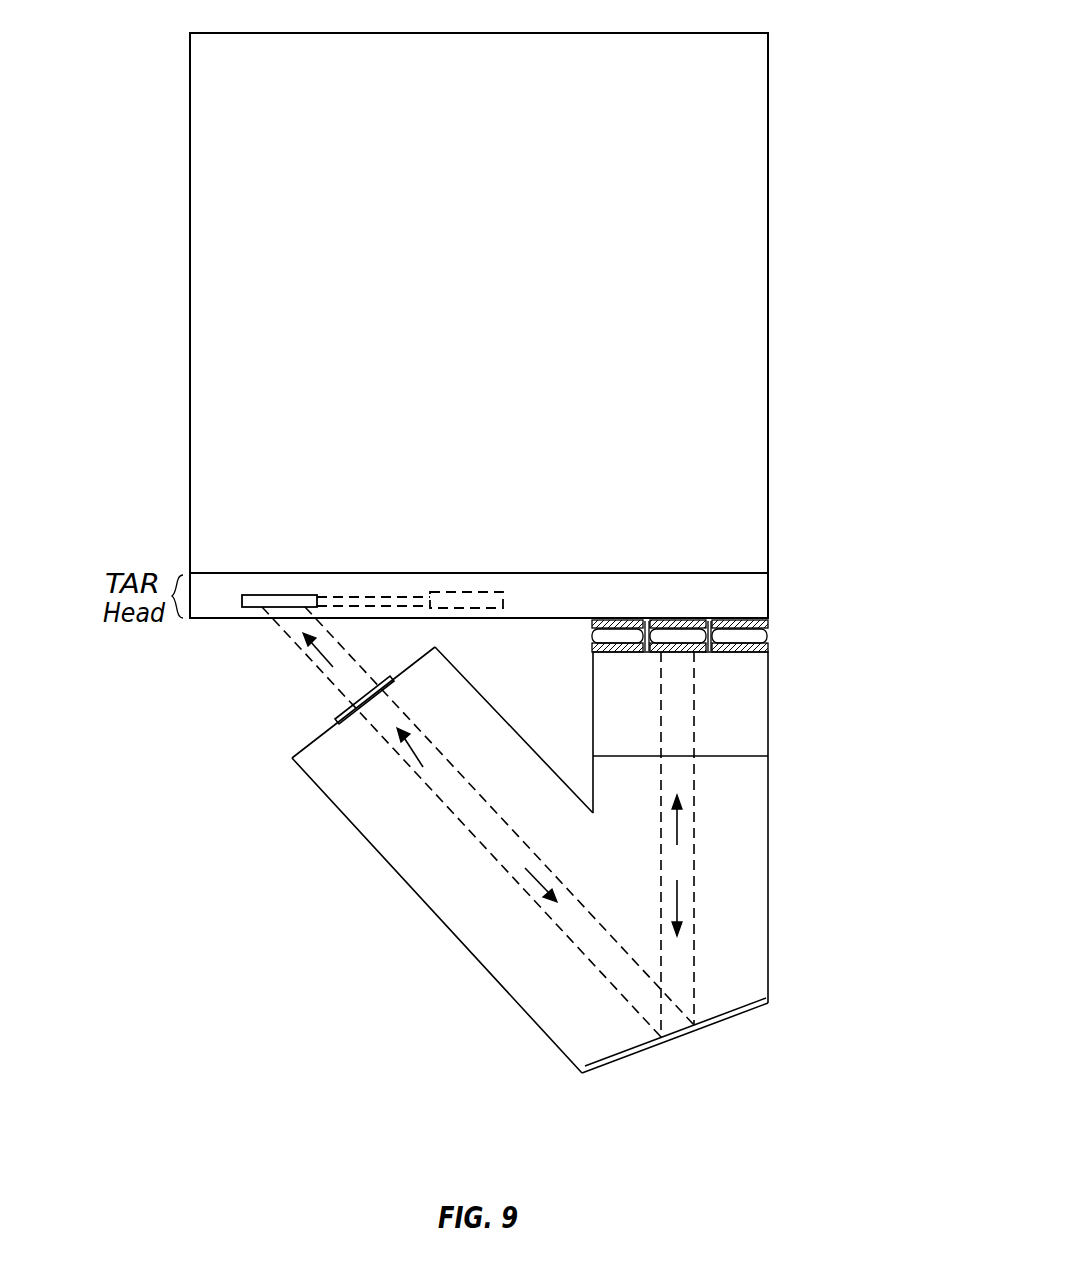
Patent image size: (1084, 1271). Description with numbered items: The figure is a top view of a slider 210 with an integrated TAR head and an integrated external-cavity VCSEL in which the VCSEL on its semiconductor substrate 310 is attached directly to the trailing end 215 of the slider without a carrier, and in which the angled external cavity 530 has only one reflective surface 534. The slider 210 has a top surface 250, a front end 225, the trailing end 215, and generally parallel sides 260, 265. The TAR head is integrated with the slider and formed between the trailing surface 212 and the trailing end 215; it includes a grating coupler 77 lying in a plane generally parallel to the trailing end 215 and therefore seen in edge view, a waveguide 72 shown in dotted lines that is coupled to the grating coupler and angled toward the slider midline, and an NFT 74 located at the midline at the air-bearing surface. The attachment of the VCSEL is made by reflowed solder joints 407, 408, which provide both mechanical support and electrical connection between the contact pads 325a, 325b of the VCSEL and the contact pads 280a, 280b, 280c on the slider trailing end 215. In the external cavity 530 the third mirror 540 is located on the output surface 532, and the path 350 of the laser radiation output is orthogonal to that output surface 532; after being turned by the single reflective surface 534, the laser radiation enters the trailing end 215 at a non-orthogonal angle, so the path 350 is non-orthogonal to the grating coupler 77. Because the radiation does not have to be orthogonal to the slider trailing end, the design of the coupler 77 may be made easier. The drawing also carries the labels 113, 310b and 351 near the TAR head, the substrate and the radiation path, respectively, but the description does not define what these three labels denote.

The slider 210 is at (503, 316).
The front end 225 is at (221, 33).
The top surface 250 is at (212, 143).
The side 260 is at (190, 352).
The side 265 is at (770, 225).
The trailing end 215 is at (222, 619).
The trailing surface 212 is at (338, 573).
The TAR head body 113 is at (752, 598).
The grating coupler 77 is at (255, 595).
The waveguide 72 is at (390, 597).
The NFT 74 is at (488, 592).
The contact pad 280a is at (612, 621).
The contact pad 280b is at (688, 622).
The contact pad 280c is at (768, 625).
The reflowed solder joint 407 is at (668, 622).
The reflowed solder joint 408 is at (770, 637).
The contact pad 325a is at (690, 652).
The contact pad 325b is at (770, 645).
The semiconductor substrate 310 is at (750, 717).
The substrate surface 310b is at (760, 756).
The angled external cavity 530 is at (500, 966).
The output surface 532 is at (300, 753).
The reflective surface 534 is at (684, 1040).
The third mirror 540 is at (336, 712).
The laser radiation path 350 is at (330, 658).
The reflected light 351 is at (525, 868).